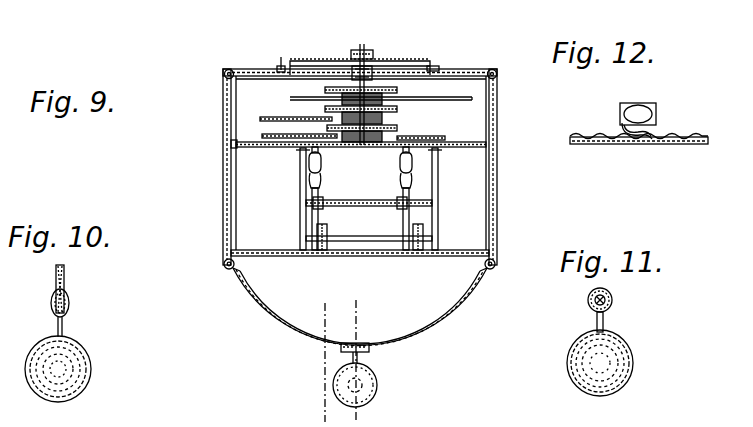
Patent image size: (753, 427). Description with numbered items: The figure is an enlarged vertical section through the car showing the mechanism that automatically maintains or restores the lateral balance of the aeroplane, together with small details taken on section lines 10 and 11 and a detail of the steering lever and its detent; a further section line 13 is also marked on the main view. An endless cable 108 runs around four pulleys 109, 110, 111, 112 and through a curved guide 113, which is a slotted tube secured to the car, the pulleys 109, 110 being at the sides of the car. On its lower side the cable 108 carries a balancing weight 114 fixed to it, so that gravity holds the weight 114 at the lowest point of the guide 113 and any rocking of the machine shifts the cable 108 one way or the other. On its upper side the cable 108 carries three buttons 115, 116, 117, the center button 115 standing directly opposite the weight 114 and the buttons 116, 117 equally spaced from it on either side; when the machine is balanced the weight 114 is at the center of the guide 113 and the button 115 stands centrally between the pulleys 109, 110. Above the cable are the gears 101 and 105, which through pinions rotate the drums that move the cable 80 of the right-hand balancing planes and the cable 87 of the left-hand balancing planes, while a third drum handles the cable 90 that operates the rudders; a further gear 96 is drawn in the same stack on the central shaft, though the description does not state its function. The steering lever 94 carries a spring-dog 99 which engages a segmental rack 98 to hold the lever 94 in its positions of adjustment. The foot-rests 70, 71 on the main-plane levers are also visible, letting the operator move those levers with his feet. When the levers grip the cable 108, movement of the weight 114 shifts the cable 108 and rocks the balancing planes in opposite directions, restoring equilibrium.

In FIG. 9, the section line 10- 10 is at (322, 323).
In FIG. 9, the section line 11- 11 is at (375, 327).
In FIG. 9, the shaft / section line 13- 13 is at (361, 42).
In FIG. 9, the foot-rest 70 is at (308, 170).
In FIG. 9, the foot-rest 71 is at (414, 178).
In FIG. 9, the cable 80 is at (280, 117).
In FIG. 9, the cable 87 is at (453, 100).
In FIG. 9, the cable 90 is at (282, 137).
In FIG. 12, the steering lever 94 is at (648, 112).
In FIG. 9, the gear 96 is at (398, 128).
In FIG. 9, the segmental rack 98 is at (411, 61).
In FIG. 12, the segmental rack 98 is at (690, 144).
In FIG. 12, the spring-dog 99 is at (655, 131).
In FIG. 9, the gear 101 is at (399, 109).
In FIG. 9, the gear 105 is at (398, 90).
In FIG. 9, the endless cable 108 is at (228, 143).
In FIG. 10, the endless cable 108 is at (66, 277).
In FIG. 11, the endless cable 108 is at (589, 301).
In FIG. 9, the pulley 109 is at (229, 68).
In FIG. 9, the pulley 110 is at (497, 71).
In FIG. 9, the pulley 111 is at (496, 265).
In FIG. 9, the pulley 112 is at (223, 266).
In FIG. 9, the curved guide 113 is at (428, 325).
In FIG. 10, the curved guide 113 is at (70, 301).
In FIG. 11, the curved guide 113 is at (612, 299).
In FIG. 9, the balancing weight 114 is at (378, 387).
In FIG. 10, the balancing weight 114 is at (91, 362).
In FIG. 11, the balancing weight 114 is at (636, 366).
In FIG. 9, the button 115 is at (373, 60).
In FIG. 9, the button 116 is at (281, 57).
In FIG. 9, the button 117 is at (440, 70).